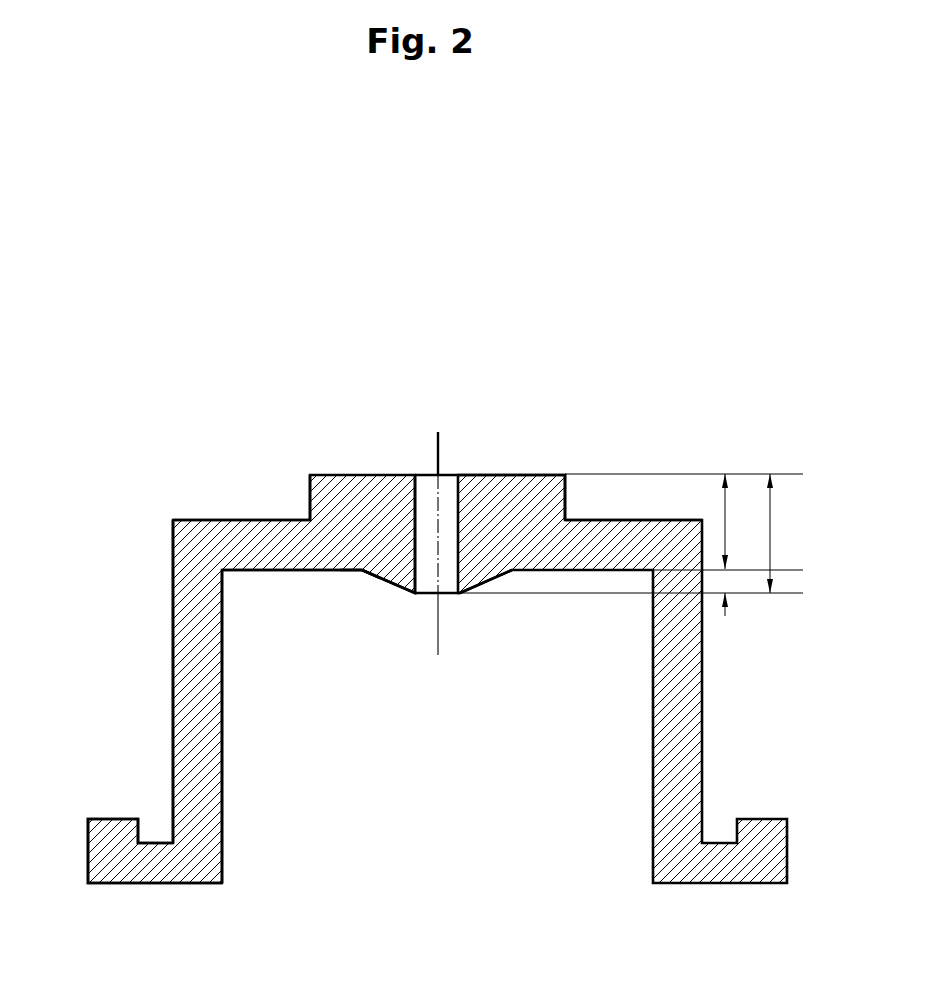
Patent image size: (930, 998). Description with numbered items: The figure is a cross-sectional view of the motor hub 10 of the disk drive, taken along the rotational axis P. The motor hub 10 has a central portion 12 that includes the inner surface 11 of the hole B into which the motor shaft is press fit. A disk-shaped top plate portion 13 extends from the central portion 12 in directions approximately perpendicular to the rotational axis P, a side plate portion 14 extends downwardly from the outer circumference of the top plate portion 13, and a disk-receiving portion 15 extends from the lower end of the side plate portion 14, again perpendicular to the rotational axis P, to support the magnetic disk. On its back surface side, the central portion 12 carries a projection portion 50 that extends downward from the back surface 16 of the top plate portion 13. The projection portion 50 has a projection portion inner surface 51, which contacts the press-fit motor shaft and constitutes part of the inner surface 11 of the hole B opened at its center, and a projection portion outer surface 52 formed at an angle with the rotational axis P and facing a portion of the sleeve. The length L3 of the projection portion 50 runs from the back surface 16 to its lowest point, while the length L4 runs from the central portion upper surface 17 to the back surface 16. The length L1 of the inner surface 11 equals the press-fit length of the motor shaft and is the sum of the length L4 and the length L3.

The motor hub 10 is at (444, 300).
The inner surface 11 is at (423, 475).
The central portion 12 is at (493, 495).
The top plate portion 13 is at (242, 533).
The side plate portion 14 is at (210, 637).
The disk-receiving portion 15 is at (102, 833).
The back surface 16 is at (305, 571).
The central portion upper surface 17 is at (550, 478).
The projection portion 50 is at (393, 587).
The projection portion inner surface 51 is at (422, 597).
The projection portion outer surface 52 is at (372, 575).
The rotational axis P is at (439, 528).
The hole B is at (447, 486).
The length of press-fit portion L1 is at (782, 533).
The length of projection portion L3 is at (737, 593).
The length from upper surface to back surface L4 is at (737, 521).